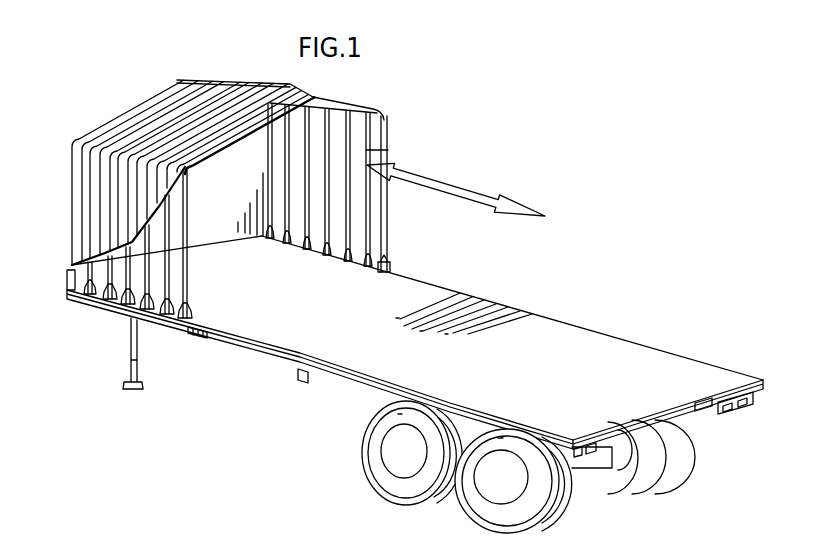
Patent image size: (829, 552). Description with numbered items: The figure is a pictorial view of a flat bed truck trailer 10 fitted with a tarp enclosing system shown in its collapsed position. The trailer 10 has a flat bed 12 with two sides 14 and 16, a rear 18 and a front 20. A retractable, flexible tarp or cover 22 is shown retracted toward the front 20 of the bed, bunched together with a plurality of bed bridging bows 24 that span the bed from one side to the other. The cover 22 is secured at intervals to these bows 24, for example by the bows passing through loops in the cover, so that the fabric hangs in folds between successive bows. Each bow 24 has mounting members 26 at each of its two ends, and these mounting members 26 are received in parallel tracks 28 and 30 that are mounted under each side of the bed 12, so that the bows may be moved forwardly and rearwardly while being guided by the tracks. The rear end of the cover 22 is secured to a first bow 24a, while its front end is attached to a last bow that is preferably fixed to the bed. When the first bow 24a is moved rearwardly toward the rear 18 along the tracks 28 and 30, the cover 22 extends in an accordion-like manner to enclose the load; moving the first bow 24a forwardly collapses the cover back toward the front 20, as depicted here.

The flat bed truck trailer 10 is at (238, 364).
The flat bed 12 is at (553, 366).
The side 14 is at (369, 345).
The side 16 is at (578, 333).
The rear 18 is at (694, 409).
The front 20 is at (210, 204).
The cover 22 is at (66, 239).
The bed bridging bows 24 is at (388, 139).
The first bow 24a is at (390, 160).
The mounting members 26 is at (391, 274).
The track 28 is at (303, 367).
The track 30 is at (757, 390).